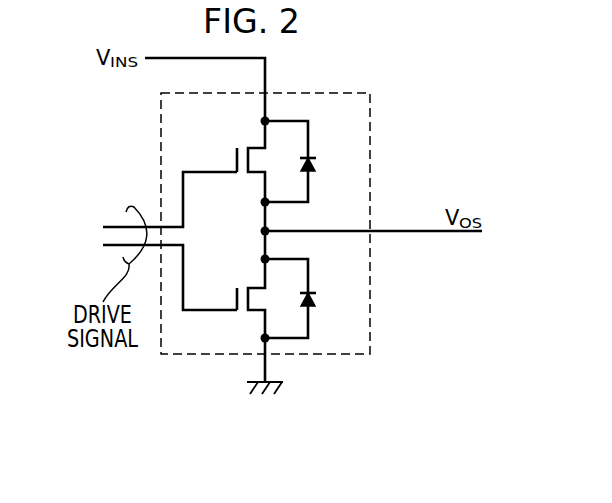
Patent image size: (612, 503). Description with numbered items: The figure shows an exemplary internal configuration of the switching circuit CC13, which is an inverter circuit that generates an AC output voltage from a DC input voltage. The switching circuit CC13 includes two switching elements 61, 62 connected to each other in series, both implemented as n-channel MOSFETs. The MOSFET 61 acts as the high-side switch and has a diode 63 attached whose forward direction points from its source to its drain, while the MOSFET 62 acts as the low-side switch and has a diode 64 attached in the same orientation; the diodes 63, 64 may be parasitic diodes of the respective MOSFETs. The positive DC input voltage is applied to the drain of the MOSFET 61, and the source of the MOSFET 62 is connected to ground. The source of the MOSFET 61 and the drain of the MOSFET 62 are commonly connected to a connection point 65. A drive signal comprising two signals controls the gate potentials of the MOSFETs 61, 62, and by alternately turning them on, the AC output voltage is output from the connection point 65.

The switching element 61 is at (255, 147).
The switching element 62 is at (255, 287).
The diode 63 is at (312, 165).
The diode 64 is at (312, 300).
The connection point 65 is at (260, 229).
The switching circuit CC13 is at (368, 77).